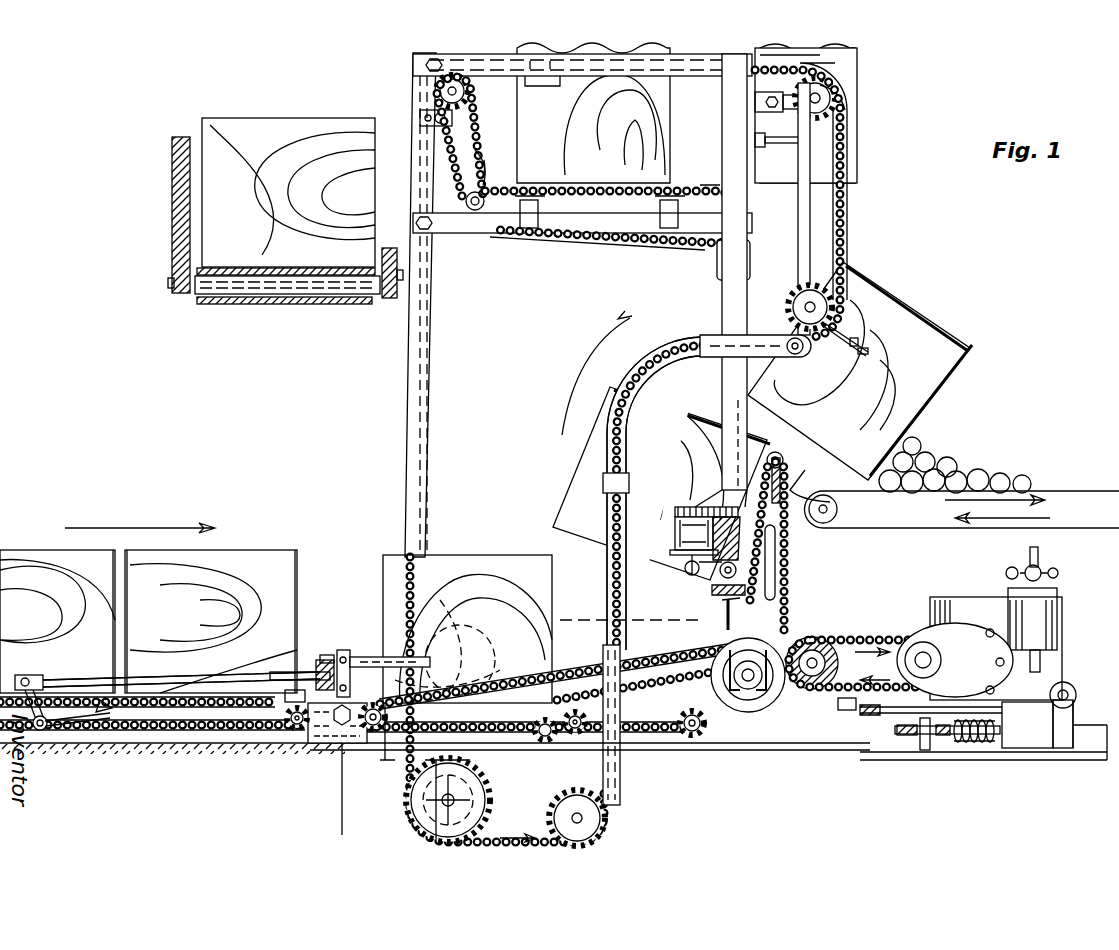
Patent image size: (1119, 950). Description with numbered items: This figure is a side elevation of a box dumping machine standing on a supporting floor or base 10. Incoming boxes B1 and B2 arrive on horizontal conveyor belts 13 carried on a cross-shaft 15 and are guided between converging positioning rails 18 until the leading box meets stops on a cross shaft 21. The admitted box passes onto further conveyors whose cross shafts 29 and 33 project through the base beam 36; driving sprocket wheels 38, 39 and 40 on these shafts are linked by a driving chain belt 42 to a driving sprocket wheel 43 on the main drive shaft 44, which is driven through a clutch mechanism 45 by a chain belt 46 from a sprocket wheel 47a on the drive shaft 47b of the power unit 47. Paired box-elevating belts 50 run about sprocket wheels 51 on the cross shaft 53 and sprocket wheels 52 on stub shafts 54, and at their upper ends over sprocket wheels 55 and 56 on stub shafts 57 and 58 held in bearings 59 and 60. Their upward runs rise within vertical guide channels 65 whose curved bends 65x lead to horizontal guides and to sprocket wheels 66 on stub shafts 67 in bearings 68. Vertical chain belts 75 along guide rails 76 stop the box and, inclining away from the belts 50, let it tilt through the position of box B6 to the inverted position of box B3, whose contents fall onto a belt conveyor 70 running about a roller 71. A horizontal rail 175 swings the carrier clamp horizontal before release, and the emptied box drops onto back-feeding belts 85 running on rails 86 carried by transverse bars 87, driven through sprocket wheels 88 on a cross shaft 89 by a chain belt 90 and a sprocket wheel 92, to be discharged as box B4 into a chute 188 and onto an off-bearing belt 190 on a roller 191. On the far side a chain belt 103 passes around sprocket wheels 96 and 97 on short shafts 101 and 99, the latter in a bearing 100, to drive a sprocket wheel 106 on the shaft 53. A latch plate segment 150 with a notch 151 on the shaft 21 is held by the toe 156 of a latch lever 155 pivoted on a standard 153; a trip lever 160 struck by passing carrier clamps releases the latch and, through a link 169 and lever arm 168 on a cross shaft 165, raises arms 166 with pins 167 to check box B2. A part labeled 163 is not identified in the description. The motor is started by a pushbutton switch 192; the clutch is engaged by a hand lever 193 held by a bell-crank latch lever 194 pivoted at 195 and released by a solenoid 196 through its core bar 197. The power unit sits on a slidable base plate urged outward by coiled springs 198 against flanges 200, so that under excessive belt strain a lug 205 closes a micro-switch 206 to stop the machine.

The supporting floor or base 10 is at (200, 750).
The conveyor belts 13 is at (162, 728).
The horizontal cross-shaft 15 is at (343, 748).
The positioning rails 18 is at (190, 690).
The cross shaft 21 is at (278, 746).
The cross shaft 29 is at (568, 740).
The cross shaft 33 is at (700, 752).
The base beam 36 is at (810, 762).
The driving sprocket wheel 38 is at (390, 770).
The driving sprocket wheel 39 is at (576, 720).
The driving sprocket wheel 40 is at (735, 725).
The driving chain belt 42 is at (560, 670).
The driving sprocket wheel 43 is at (685, 708).
The drive shaft 44 is at (748, 692).
The clutch mechanism 45 is at (792, 630).
The chain belt 46 is at (922, 640).
The power unit 47 is at (965, 597).
The sprocket wheel 47a is at (932, 662).
The drive shaft of the motor unit 47b is at (928, 640).
The box-elevating belts 50 is at (848, 206).
The sprocket wheels 51 is at (415, 778).
The sprocket wheels 52 is at (565, 800).
The cross shaft 53 is at (440, 800).
The stub shafts 54 is at (572, 820).
The sprocket wheel 55 is at (310, 100).
The sprocket wheel 56 is at (935, 230).
The stub shaft 57 is at (440, 97).
The stub shaft 58 is at (832, 102).
The bearing 59 is at (440, 120).
The bearing 60 is at (846, 112).
The vertical guide channels 65 is at (603, 505).
The curved bends 65x is at (652, 344).
The sprocket wheels 66 is at (845, 268).
The stub shafts 67 is at (862, 302).
The bearings 68 is at (834, 318).
The belt conveyor 70 is at (1060, 490).
The supporting roller 71 is at (855, 510).
The vertically operating chain belts 75 is at (790, 572).
The vertical guide rails 76 is at (820, 515).
The back-feeding conveyor belts 85 is at (582, 195).
The horizontal rails 86 is at (618, 246).
The transverse bars 87 is at (526, 218).
The sprocket wheels 88 is at (488, 168).
The cross shaft 89 is at (476, 206).
The chain belt 90 is at (488, 148).
The sprocket wheel 92 is at (466, 91).
The sprocket wheel 96 is at (467, 629).
The sprocket wheel 97 is at (822, 650).
The short shaft 99 is at (868, 663).
The bearing 100 is at (822, 695).
The short shaft 101 is at (468, 643).
The sprocket chain belt 103 is at (562, 626).
The sprocket wheel 106 is at (480, 770).
The latch plate segment 150 is at (285, 700).
The peripheral notch 151 is at (272, 685).
The standard 153 is at (340, 648).
The latch lever 155 is at (292, 735).
The toe 156 is at (302, 688).
The lever 160 is at (360, 660).
The sprocket 163 is at (285, 733).
The cross shaft 165 is at (35, 730).
The arms 166 is at (85, 736).
The pins 167 is at (108, 740).
The lever arm 168 is at (40, 677).
The link 169 is at (150, 680).
The horizontal rail 175 is at (800, 63).
The chute 188 is at (180, 210).
The off-bearing conveyor belt 190 is at (258, 280).
The roller 191 is at (315, 285).
The pushbutton switch 192 is at (752, 258).
The hand lever 193 is at (775, 578).
The bell-crank latch lever 194 is at (745, 595).
The pivot 195 is at (700, 602).
The solenoid 196 is at (676, 530).
The core bar 197 is at (690, 568).
The coiled springs 198 is at (700, 476).
The wings or flanges 200 is at (1030, 730).
The lug 205 is at (941, 737).
The micro-switch 206 is at (880, 745).
The incoming box B1 is at (243, 550).
The incoming box B2 is at (30, 550).
The box in dumping position B3 is at (950, 330).
The box being discharged B4 is at (212, 118).
The tilting box B6 is at (575, 480).